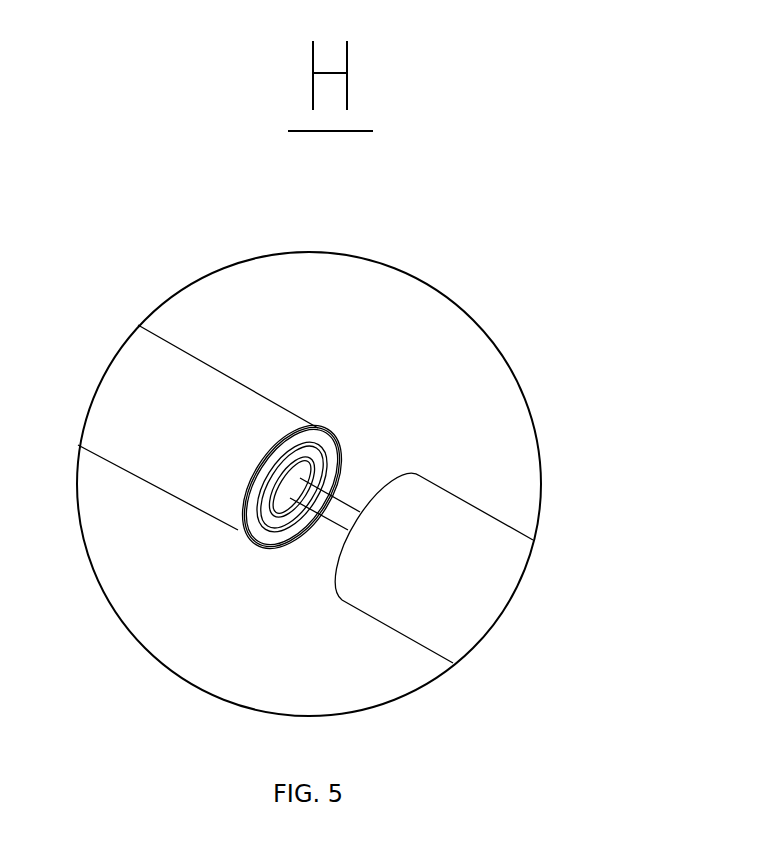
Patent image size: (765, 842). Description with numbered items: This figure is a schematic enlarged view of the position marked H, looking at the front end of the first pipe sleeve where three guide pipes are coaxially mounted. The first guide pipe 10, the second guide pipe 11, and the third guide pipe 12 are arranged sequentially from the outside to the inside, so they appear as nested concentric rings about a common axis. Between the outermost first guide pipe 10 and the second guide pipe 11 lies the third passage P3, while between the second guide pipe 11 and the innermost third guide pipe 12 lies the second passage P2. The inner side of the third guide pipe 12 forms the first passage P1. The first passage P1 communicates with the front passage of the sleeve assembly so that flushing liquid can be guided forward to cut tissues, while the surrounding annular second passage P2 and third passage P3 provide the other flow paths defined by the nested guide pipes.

The first guide pipe 10 is at (240, 532).
The second guide pipe 11 is at (278, 530).
The third guide pipe 12 is at (325, 432).
The first passage P1 is at (303, 510).
The second passage P2 is at (310, 467).
The third passage P3 is at (273, 462).